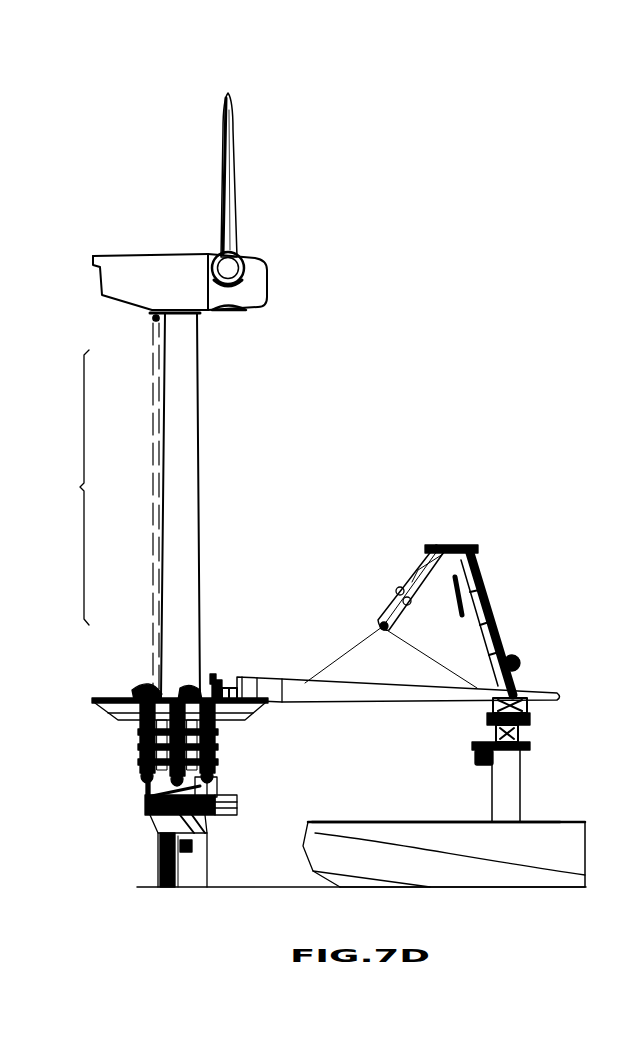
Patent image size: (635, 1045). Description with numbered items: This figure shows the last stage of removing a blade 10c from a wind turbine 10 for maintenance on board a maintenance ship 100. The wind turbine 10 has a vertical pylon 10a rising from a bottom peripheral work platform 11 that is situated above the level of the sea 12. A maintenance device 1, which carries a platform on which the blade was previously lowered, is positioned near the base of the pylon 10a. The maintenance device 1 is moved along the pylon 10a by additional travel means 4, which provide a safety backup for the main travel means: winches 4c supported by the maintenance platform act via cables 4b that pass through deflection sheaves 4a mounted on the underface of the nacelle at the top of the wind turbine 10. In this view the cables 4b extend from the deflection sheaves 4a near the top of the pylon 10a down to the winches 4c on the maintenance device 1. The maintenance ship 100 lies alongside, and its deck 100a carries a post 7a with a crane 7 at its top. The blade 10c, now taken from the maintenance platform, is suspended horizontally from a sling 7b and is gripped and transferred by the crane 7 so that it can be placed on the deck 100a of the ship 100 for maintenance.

The wind turbine 10 is at (264, 219).
The pylon 10a is at (187, 390).
The blade 10c is at (356, 694).
The additional travel means 4 is at (110, 507).
The deflection sheaves 4a is at (153, 321).
The cables 4b is at (156, 509).
The winches 4c is at (141, 697).
The maintenance device 1 is at (129, 729).
The bottom peripheral work platform 11 is at (144, 805).
The sea 12 is at (279, 887).
The crane 7 is at (442, 682).
The post 7a is at (508, 778).
The sling 7b is at (349, 656).
The maintenance ship 100 is at (455, 834).
The deck 100a is at (536, 822).